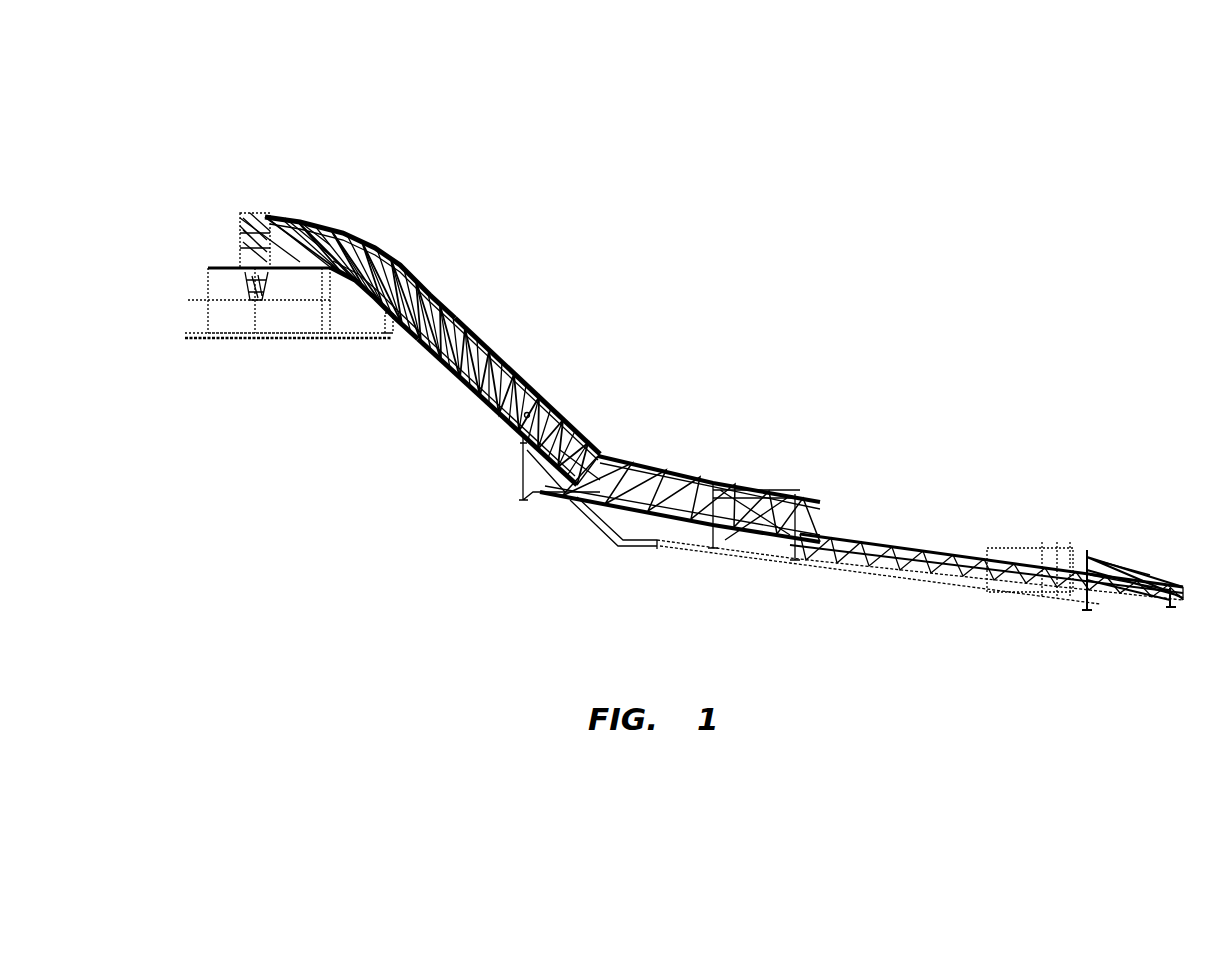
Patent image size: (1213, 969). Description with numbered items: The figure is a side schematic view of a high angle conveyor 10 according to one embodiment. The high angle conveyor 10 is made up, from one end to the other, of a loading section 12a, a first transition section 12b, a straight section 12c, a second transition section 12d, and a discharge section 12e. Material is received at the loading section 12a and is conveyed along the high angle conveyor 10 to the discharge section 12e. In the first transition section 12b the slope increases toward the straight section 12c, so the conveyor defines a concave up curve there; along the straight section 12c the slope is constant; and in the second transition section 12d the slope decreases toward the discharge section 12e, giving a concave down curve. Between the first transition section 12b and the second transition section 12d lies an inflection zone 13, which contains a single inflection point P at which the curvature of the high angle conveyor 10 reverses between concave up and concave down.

The high angle conveyor 10 is at (835, 265).
The loading section 12a is at (997, 597).
The first transition section 12b is at (582, 525).
The straight section 12c is at (443, 372).
The second transition section 12d is at (400, 248).
The discharge section 12e is at (263, 205).
The inflection zone 13 is at (585, 420).
The inflection point P is at (527, 413).